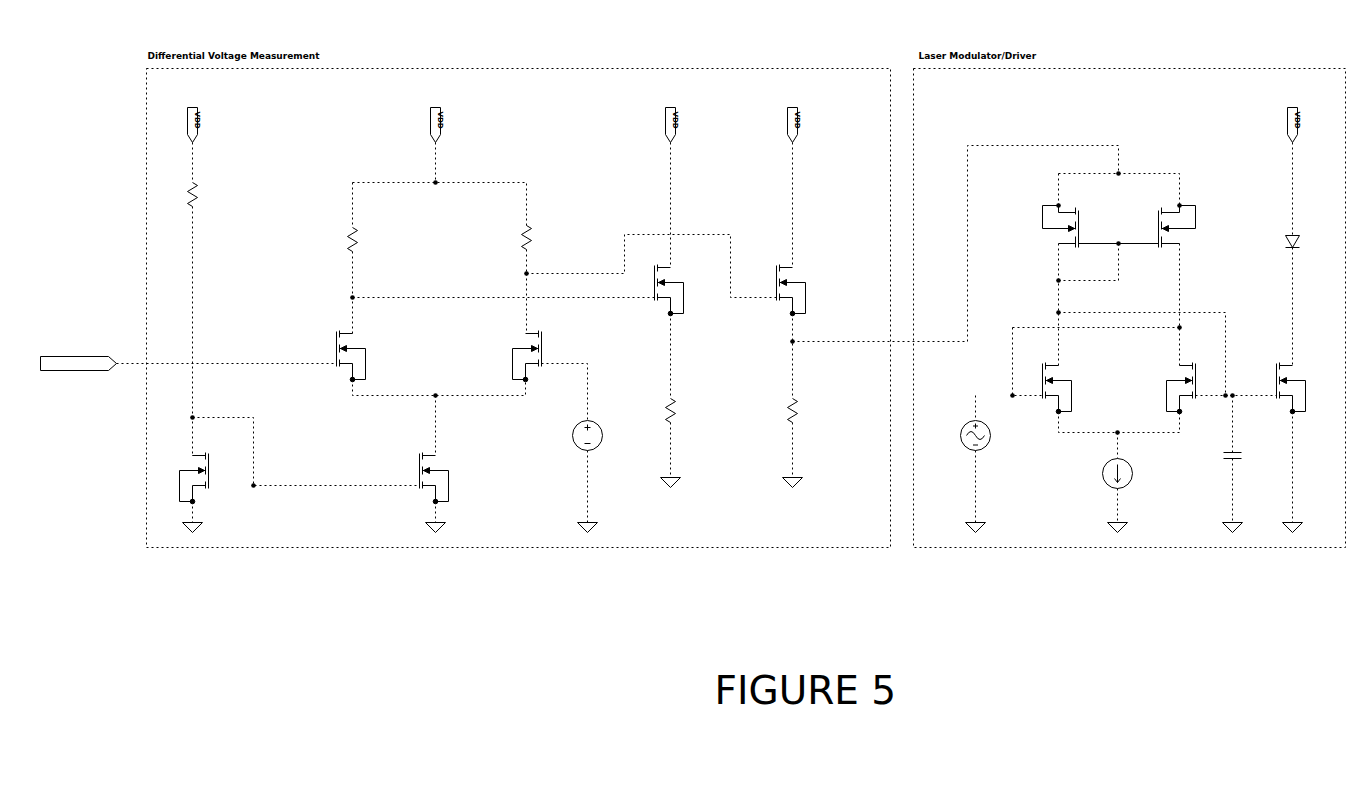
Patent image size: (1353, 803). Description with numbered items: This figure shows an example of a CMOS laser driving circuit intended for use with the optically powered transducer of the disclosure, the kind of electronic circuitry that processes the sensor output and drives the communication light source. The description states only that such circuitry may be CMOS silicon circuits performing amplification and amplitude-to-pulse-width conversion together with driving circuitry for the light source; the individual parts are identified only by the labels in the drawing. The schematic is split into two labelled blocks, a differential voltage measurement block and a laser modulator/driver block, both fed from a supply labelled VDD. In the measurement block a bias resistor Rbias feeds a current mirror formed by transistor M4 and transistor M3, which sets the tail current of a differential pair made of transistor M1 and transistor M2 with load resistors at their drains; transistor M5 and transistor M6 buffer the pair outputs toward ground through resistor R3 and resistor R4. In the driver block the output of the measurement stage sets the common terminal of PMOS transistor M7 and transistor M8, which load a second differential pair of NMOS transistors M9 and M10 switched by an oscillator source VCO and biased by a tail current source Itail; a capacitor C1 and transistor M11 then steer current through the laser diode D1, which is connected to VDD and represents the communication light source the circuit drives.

The supply voltage VDD is at (745, 125).
The bias resistor Rbias is at (210, 194).
The resistor R3 is at (680, 411).
The resistor R4 is at (802, 411).
The CMOSN transistor M1 is at (367, 356).
The CMOSN transistor M2 is at (510, 356).
The CMOSN transistor M3 is at (451, 478).
The CMOSN transistor M4 is at (177, 478).
The CMOSN transistor M5 is at (686, 290).
The CMOSN transistor M6 is at (808, 290).
The PMOS transistor M7 is at (1167, 227).
The PMOS transistor M8 is at (1071, 227).
The NMOS transistor M9 is at (1070, 388).
The NMOS transistor M10 is at (1168, 388).
The NMOS transistor M11 is at (1304, 388).
The voltage controlled oscillator source VCO is at (987, 431).
The tail current source Itail is at (1128, 469).
The capacitor C1 is at (1238, 449).
The laser diode D1 is at (1268, 247).